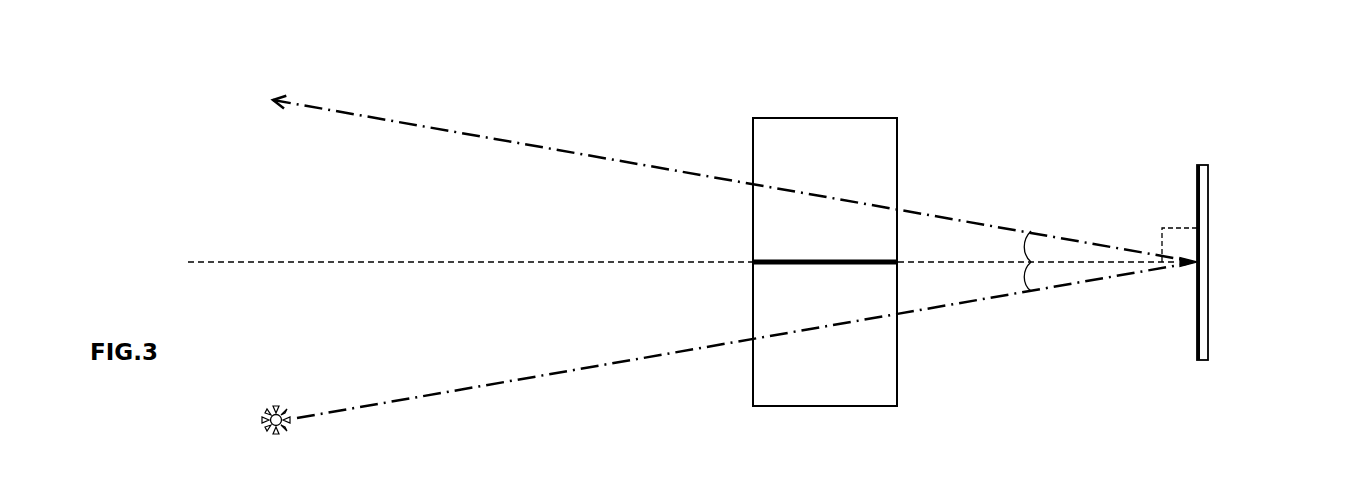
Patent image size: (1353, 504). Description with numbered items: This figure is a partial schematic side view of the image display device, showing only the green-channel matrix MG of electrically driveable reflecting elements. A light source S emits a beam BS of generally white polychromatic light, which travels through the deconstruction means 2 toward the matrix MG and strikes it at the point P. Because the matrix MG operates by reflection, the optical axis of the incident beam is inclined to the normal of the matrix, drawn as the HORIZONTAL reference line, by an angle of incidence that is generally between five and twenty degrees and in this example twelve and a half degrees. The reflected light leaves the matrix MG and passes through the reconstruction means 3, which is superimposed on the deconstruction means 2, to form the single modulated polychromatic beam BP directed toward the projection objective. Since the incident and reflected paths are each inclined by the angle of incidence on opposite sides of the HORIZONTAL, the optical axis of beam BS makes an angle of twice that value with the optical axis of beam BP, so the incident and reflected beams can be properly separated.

The deconstruction means 2 is at (838, 385).
The reconstruction means 3 is at (825, 140).
The light source S is at (277, 432).
The point of incidence on matrix P is at (1179, 286).
The matrix of reflecting elements MG is at (1200, 210).
The modulated polychromatic beam BP is at (507, 137).
The source beam BS is at (610, 365).
The horizontal reference line HORIZONTAL is at (382, 260).